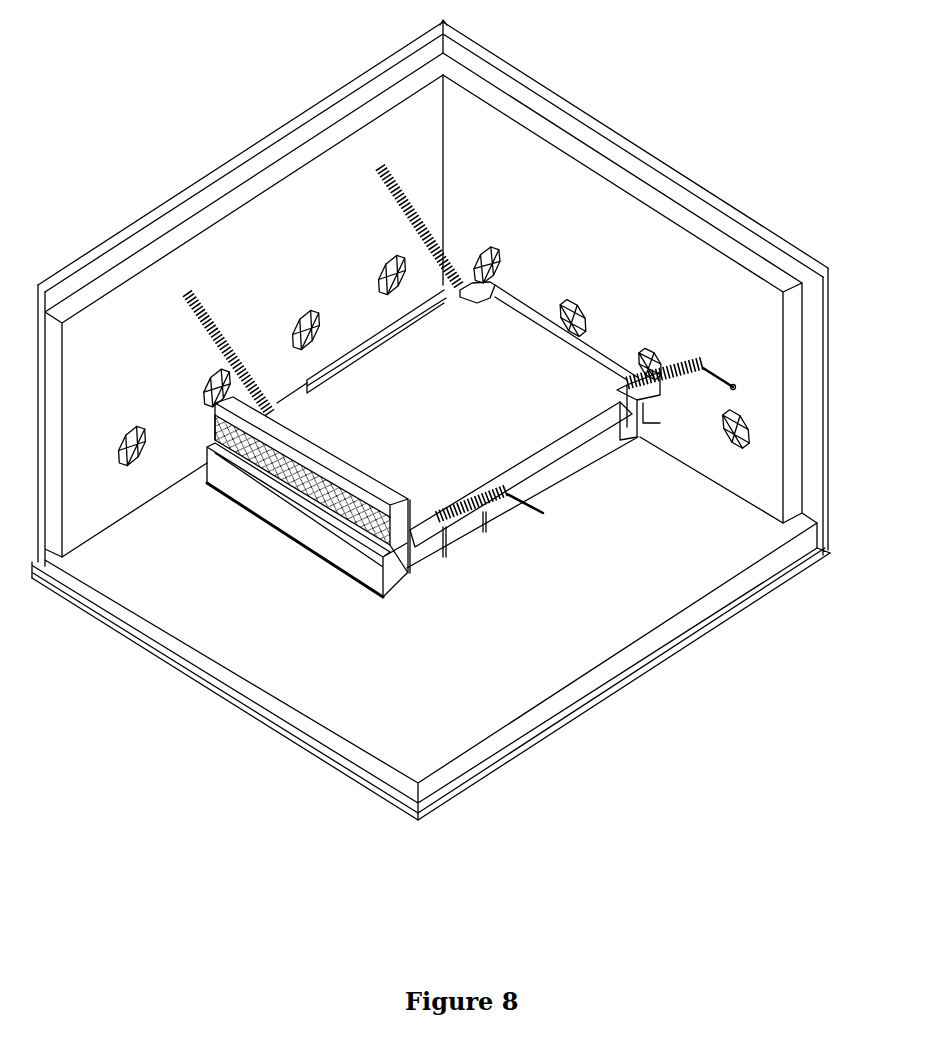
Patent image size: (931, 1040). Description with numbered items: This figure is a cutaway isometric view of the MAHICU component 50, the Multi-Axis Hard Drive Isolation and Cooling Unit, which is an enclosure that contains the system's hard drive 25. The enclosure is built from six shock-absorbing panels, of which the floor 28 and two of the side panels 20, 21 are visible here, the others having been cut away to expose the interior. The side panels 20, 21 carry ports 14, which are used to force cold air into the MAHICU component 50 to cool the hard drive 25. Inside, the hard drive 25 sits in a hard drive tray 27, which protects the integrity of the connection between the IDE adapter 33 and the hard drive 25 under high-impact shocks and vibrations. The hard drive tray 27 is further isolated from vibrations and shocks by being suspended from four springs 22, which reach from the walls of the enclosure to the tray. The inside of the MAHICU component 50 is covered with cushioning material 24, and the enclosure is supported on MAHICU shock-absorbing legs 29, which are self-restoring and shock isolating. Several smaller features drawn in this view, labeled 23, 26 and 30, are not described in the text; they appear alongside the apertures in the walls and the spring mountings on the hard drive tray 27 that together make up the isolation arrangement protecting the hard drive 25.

The port 14 is at (490, 256).
The side panel 20 is at (713, 182).
The side panel 21 is at (182, 180).
The spring 22 is at (217, 340).
The aperture 23 is at (295, 285).
The cushioning material 24 is at (292, 713).
The hard drive 25 is at (443, 400).
The bracket 26 is at (713, 385).
The hard drive tray 27 is at (563, 468).
The floor 28 is at (195, 682).
The MAHICU shock-absorbing leg 29 is at (384, 580).
The spring 30 is at (453, 537).
The IDE adapter 33 is at (400, 532).
The MAHICU component 50 is at (360, 62).